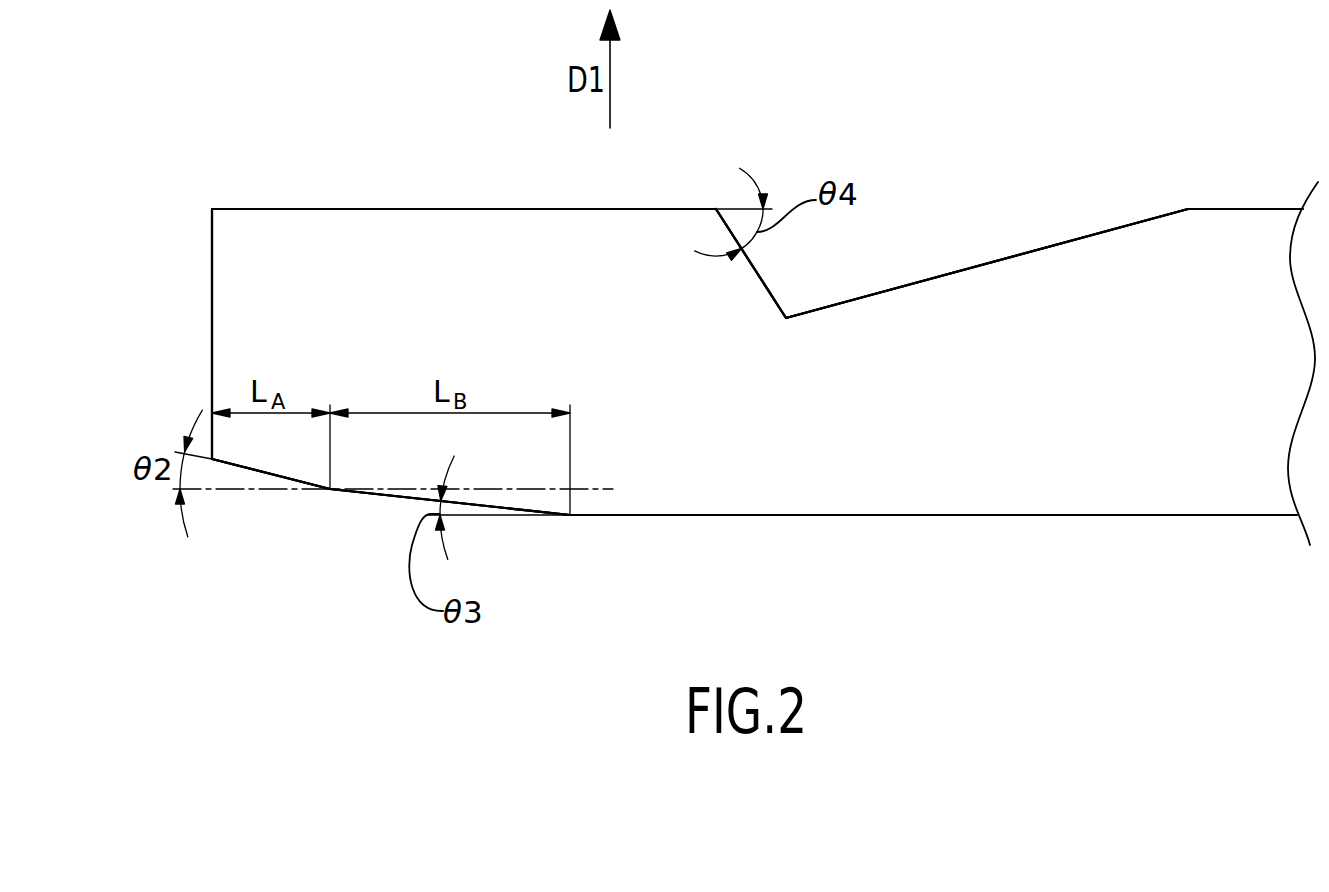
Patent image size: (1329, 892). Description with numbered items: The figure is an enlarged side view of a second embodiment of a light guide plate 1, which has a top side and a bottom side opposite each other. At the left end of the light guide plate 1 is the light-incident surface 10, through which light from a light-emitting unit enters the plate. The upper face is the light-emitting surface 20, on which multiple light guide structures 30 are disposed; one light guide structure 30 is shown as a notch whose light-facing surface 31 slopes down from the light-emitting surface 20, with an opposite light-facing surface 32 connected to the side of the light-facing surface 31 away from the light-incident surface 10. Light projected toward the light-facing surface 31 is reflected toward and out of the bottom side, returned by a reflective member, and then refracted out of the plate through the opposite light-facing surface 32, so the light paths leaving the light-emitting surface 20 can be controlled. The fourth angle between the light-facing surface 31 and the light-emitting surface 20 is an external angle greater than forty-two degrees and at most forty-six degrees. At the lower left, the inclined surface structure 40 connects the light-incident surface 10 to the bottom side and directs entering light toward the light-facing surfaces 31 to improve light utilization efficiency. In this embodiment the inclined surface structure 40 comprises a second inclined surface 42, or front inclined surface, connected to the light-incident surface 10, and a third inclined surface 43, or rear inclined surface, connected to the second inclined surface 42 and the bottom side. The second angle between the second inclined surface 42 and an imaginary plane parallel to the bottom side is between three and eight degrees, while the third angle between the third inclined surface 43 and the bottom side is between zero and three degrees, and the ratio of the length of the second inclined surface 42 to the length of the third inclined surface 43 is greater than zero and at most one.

The light guide plate 1 is at (351, 185).
The light-incident surface 10 is at (212, 298).
The light-emitting surface 20 is at (433, 209).
The light guide structure 30 is at (969, 235).
The light-facing surface 31 is at (772, 293).
The opposite light-facing surface 32 is at (883, 292).
The inclined surface structure 40 is at (505, 535).
The second inclined surface 42 is at (272, 477).
The third inclined surface 43 is at (390, 497).